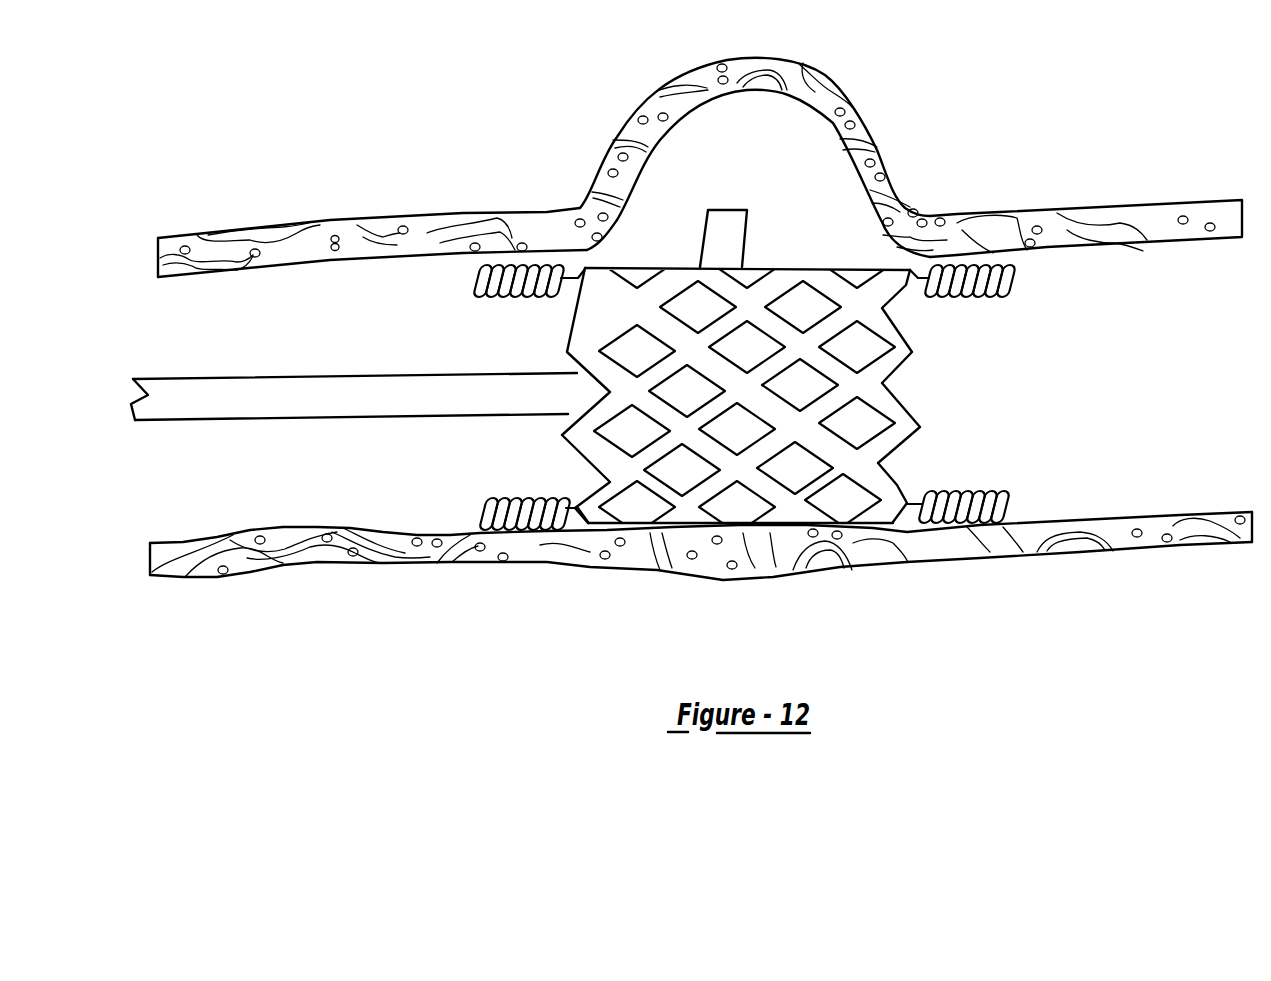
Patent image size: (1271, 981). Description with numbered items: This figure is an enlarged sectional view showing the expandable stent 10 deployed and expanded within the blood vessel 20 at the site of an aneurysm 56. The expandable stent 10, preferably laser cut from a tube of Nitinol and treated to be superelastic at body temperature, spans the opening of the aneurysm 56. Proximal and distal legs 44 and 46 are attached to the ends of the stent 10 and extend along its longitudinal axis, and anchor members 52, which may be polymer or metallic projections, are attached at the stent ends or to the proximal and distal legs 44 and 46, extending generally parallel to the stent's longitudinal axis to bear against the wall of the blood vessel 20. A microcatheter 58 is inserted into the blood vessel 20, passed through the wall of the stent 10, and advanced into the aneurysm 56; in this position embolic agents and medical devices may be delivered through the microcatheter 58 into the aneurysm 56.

The expandable stent 10 is at (737, 380).
The blood vessel 20 is at (248, 228).
The proximal leg 44 is at (570, 512).
The distal leg 46 is at (908, 503).
The anchor members 52 is at (512, 280).
The aneurysm 56 is at (716, 132).
The microcatheter 58 is at (364, 392).